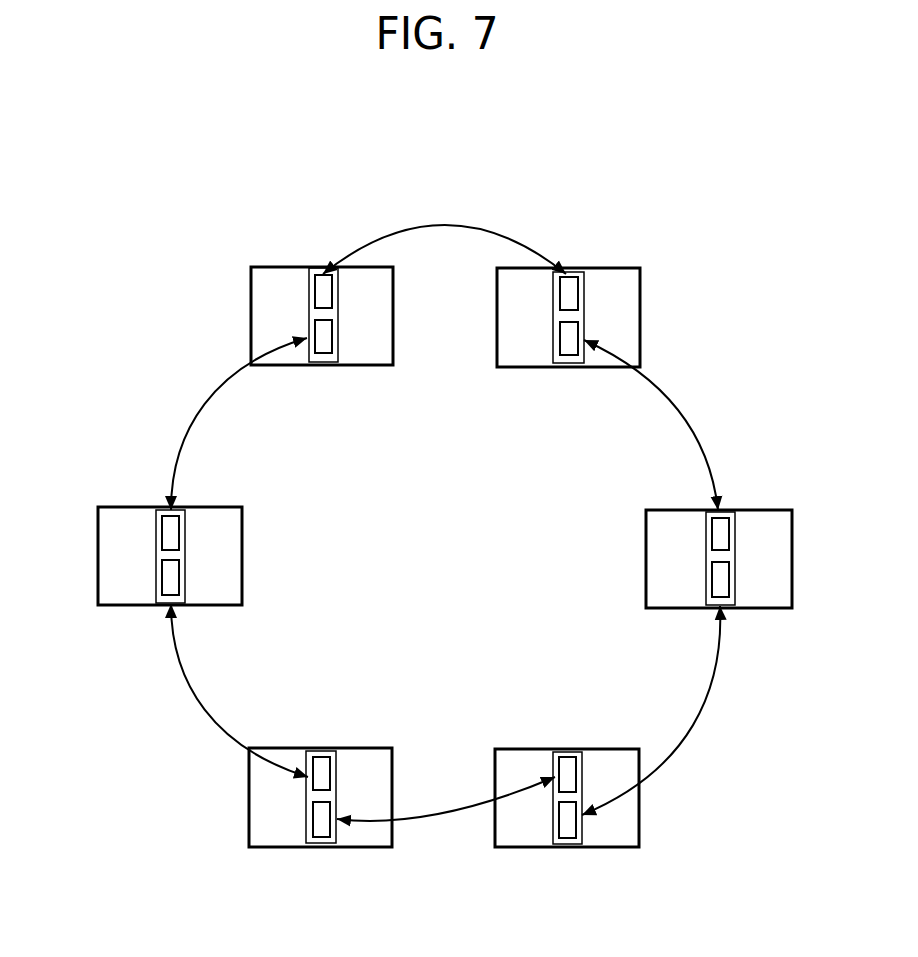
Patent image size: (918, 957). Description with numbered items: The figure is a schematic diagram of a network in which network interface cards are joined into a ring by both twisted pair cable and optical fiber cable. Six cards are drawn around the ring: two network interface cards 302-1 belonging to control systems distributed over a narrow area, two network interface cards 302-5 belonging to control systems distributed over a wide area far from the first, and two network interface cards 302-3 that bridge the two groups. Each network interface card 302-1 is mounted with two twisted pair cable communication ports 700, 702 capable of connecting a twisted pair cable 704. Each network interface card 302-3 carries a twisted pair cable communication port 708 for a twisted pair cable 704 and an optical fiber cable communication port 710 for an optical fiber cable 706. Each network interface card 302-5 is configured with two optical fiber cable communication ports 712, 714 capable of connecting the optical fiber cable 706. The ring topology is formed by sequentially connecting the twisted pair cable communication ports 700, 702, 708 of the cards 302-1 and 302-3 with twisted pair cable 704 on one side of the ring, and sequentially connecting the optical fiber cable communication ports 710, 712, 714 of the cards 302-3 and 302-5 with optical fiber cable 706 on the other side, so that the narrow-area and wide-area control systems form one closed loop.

The twisted pair cable communication port 700 is at (573, 290).
The twisted pair cable communication port 702 is at (562, 340).
The twisted pair cable 704 is at (450, 226).
The optical fiber cable 706 is at (201, 415).
The twisted pair cable communication port 708 is at (312, 292).
The optical fiber cable communication port 710 is at (324, 345).
The optical fiber cable communication port 712 is at (166, 526).
The optical fiber cable communication port 714 is at (166, 580).
The network interface card 302-1 is at (640, 306).
The network interface card 302-3 is at (251, 298).
The network interface card 302-5 is at (98, 555).